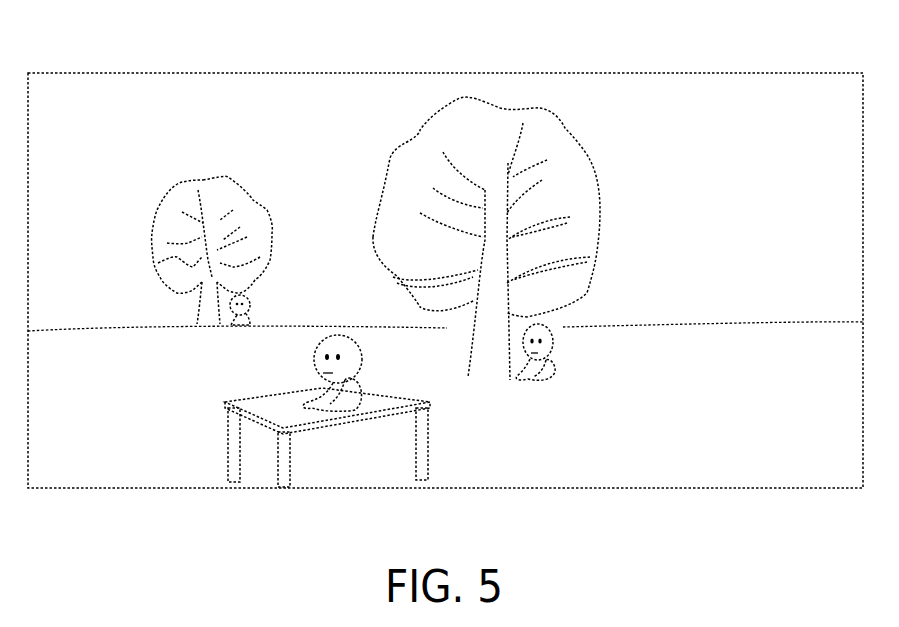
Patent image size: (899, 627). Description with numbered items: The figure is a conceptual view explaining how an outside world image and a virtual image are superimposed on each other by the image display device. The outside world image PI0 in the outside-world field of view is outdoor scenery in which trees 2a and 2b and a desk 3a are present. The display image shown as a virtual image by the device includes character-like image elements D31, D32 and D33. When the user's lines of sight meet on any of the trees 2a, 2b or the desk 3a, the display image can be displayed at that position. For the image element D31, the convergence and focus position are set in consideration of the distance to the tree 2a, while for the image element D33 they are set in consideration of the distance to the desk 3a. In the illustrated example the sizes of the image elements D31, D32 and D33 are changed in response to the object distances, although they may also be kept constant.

The outside world image PI0 is at (432, 73).
The tree 2a is at (567, 142).
The tree 2b is at (228, 175).
The desk 3a is at (385, 398).
The image element D31 is at (557, 330).
The image element D32 is at (250, 293).
The image element D33 is at (335, 332).